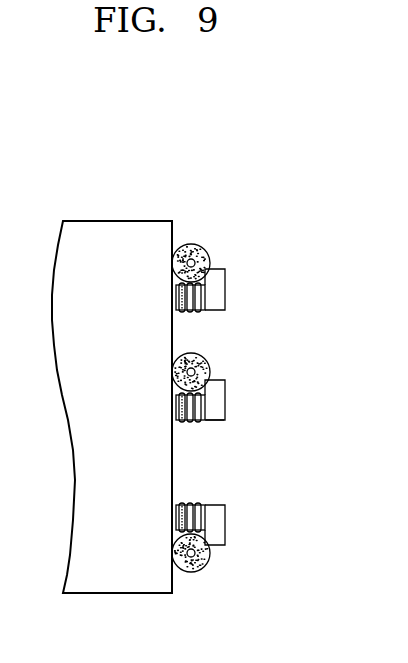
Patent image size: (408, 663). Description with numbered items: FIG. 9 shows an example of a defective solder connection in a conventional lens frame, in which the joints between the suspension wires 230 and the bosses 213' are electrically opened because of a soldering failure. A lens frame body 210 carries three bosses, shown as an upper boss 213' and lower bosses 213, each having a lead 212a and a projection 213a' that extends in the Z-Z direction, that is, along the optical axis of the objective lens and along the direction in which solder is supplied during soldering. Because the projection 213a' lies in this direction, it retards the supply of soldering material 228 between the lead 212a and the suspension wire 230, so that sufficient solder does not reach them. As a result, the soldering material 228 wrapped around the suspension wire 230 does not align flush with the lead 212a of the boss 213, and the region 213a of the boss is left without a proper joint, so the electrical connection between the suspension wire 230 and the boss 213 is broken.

The housing body 210 is at (110, 227).
The soldering material 228 is at (193, 246).
The suspension wire 230 is at (206, 251).
The lead 212a is at (190, 311).
The projection 213a' is at (260, 407).
The boss 213' is at (262, 297).
The boss 213 is at (261, 465).
The contact portion of locking member 213a is at (261, 433).